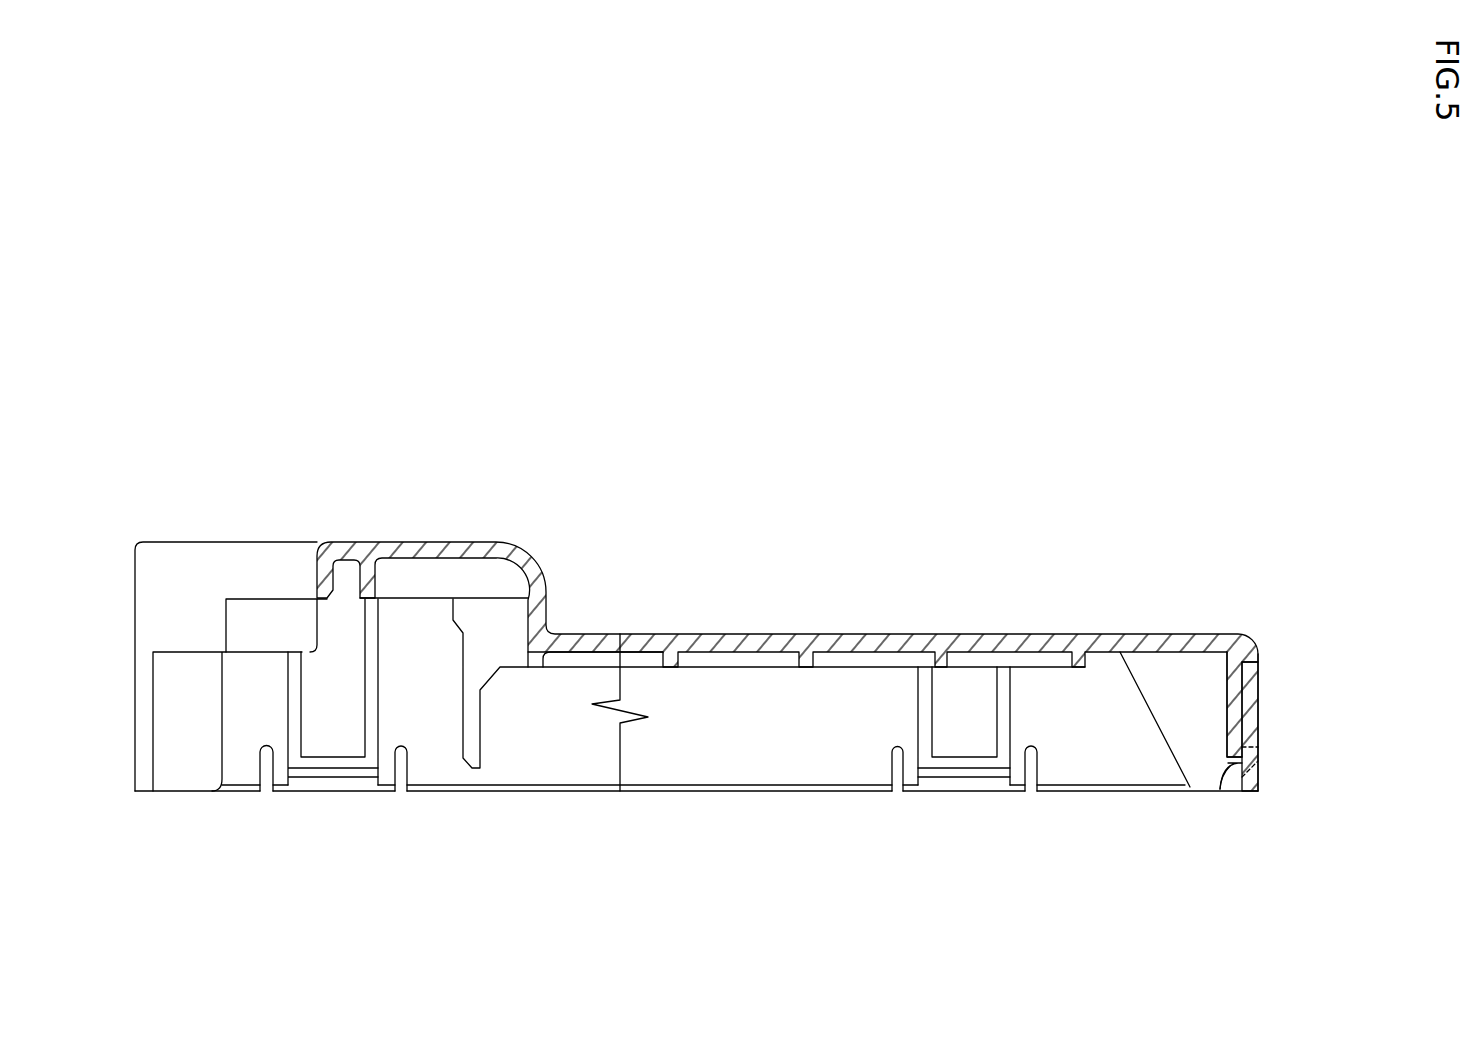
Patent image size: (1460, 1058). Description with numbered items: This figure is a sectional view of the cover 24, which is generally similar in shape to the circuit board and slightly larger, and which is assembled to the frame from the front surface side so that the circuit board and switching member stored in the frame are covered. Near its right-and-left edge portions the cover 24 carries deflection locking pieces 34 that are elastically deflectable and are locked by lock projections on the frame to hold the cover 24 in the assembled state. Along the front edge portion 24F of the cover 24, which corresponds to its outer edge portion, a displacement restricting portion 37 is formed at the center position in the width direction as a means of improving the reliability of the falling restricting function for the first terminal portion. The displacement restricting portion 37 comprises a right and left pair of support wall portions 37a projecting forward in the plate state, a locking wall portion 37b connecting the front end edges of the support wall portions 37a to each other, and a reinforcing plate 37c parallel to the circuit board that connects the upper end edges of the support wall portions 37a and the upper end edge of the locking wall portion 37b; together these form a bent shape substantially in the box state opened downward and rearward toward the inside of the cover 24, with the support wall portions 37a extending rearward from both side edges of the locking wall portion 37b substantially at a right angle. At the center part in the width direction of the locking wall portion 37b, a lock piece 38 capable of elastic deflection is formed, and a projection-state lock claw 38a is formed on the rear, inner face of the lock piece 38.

The cover 24 is at (707, 640).
The front edge portion 24F is at (1294, 697).
The deflection locking piece 34 is at (330, 770).
The displacement restricting portion 37 is at (1258, 530).
The support wall portion 37a is at (1182, 685).
The locking wall portion 37b is at (1257, 695).
The reinforcing plate 37c is at (1152, 640).
The lock piece 38 is at (1252, 770).
The lock claw 38a is at (1217, 790).